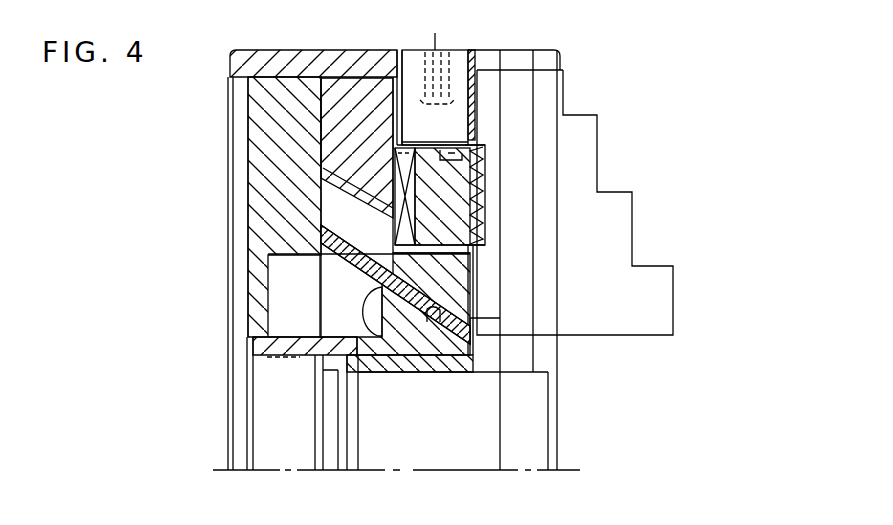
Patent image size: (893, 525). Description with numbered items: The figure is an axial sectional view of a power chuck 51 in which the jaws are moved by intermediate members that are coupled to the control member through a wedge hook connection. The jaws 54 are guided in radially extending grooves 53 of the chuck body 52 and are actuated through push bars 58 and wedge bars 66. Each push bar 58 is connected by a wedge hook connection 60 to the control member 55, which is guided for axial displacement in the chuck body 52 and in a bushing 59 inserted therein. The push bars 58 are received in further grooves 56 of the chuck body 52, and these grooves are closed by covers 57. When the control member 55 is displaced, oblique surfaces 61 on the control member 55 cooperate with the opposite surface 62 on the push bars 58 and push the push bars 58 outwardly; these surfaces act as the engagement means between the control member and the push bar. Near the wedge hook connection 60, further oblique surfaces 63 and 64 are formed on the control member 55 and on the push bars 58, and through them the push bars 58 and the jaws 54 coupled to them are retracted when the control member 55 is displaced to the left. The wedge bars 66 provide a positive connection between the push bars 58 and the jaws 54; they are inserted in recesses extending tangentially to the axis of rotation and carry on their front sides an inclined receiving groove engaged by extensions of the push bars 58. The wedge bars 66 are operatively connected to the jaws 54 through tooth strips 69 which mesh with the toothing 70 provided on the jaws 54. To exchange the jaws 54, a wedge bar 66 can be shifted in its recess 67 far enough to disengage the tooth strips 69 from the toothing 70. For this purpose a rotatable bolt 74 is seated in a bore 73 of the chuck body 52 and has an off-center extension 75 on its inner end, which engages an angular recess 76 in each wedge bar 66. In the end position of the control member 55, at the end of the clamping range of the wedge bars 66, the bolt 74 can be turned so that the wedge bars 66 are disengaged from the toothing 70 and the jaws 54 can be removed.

The pressure switch assembly 51 is at (172, 278).
The chuck body 52 is at (282, 48).
The radially extending grooves 53 is at (478, 63).
The jaws 54 is at (582, 125).
The control member 55 is at (250, 344).
The further grooves 56 is at (340, 108).
The covers 57 is at (283, 133).
The push bars 58 is at (340, 108).
The bushing 59 is at (457, 345).
The wedge hook connection 60 is at (352, 290).
The oblique surfaces 61 is at (440, 322).
The opposite surface 62 is at (367, 322).
The further oblique surface 63 is at (455, 312).
The further oblique surface 64 is at (347, 232).
The wedge bars 66 is at (482, 165).
The recess 67 is at (483, 236).
The tooth strips 69 is at (483, 187).
The toothing 70 is at (483, 212).
The bore 73 is at (463, 88).
The bolt 74 is at (406, 70).
The off-center extension 75 is at (446, 148).
The angular recess 76 is at (450, 142).